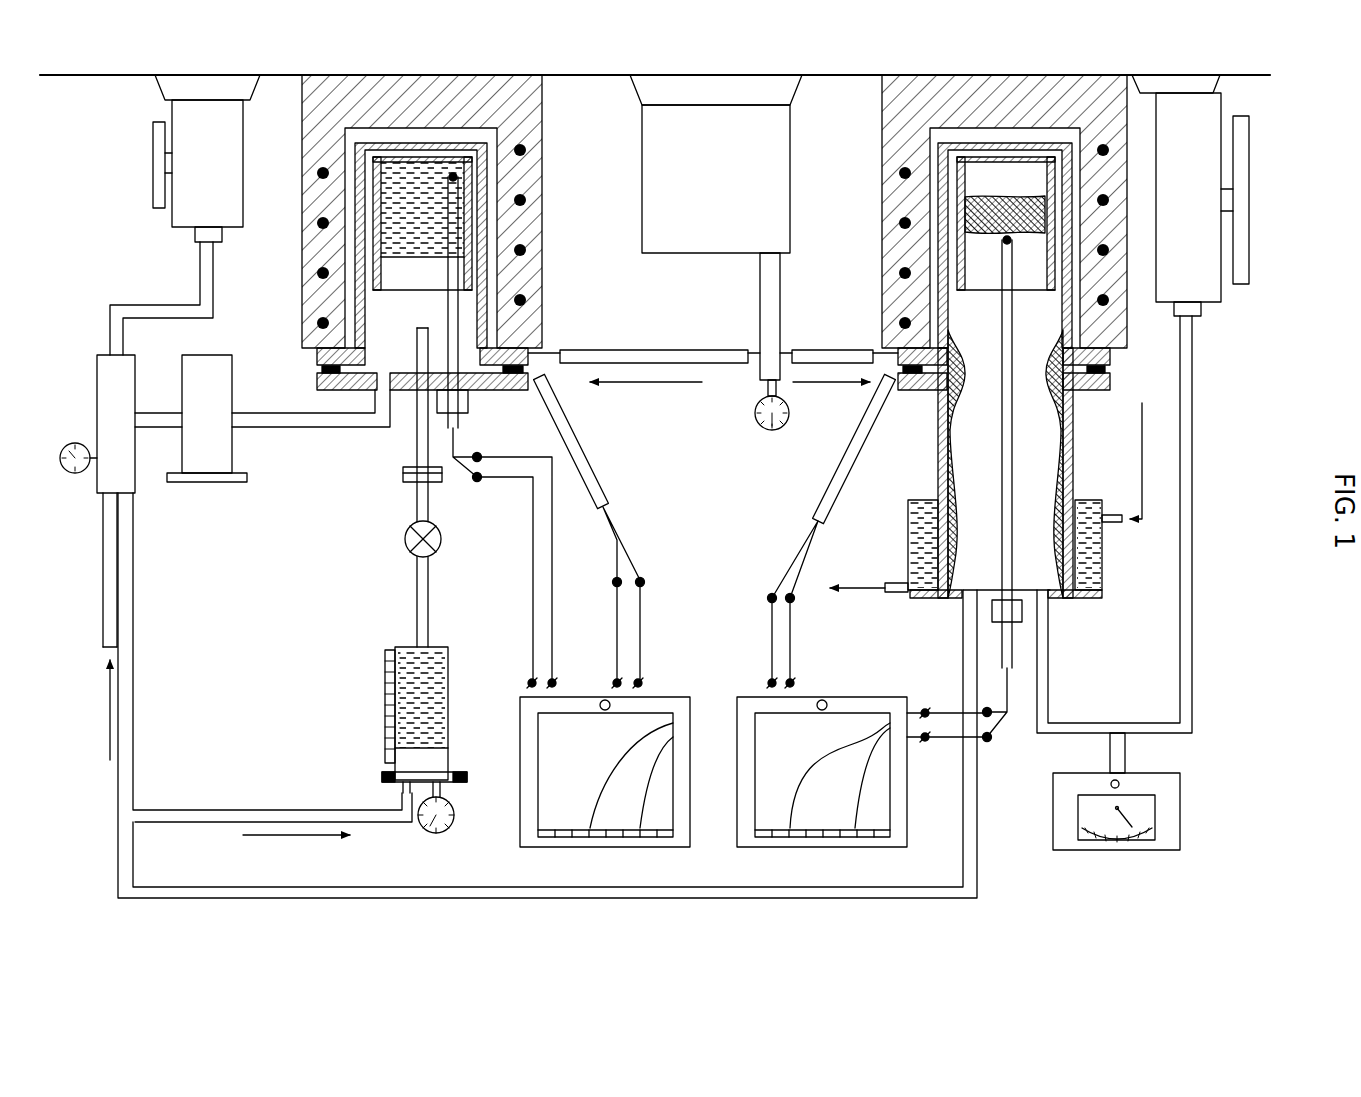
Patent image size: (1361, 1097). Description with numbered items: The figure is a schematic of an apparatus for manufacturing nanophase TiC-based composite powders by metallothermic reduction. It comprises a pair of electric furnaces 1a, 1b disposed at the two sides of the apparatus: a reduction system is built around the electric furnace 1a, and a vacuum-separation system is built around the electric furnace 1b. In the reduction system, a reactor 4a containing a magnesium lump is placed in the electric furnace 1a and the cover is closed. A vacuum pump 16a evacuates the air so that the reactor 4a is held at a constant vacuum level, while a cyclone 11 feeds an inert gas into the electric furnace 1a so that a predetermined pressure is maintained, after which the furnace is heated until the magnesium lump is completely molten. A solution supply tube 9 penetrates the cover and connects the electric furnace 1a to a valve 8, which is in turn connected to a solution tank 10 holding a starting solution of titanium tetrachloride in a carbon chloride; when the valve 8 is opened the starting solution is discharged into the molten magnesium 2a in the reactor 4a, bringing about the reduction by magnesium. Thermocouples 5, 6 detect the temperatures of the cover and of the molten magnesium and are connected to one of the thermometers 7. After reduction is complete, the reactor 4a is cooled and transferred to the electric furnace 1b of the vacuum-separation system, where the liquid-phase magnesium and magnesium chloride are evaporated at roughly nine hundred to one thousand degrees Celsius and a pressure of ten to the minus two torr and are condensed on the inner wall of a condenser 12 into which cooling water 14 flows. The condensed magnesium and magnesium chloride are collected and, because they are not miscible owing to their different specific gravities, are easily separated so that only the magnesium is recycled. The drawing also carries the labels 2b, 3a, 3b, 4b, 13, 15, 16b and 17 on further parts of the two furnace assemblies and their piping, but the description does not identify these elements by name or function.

The electric furnace 1a is at (540, 313).
The electric furnace 1b is at (883, 300).
The molten magnesium 2a is at (470, 177).
The second crucible 2b is at (958, 203).
The first reaction tube 3a is at (355, 243).
The second reaction tube 3b is at (940, 150).
The reactor 4a is at (372, 203).
The second gas passage 4b is at (958, 250).
The thermocouple 5 is at (457, 420).
The thermocouple 6 is at (422, 433).
The thermometer 7 is at (748, 700).
The valve 8 is at (408, 540).
The solution supply tube 9 is at (592, 473).
The solution tank 10 is at (408, 703).
The cyclone 11 is at (225, 452).
The condenser 12 is at (937, 473).
The packing material 13 is at (937, 433).
The cooling water 14 is at (1093, 552).
The meter 15 is at (1062, 792).
The vacuum pump 16a is at (185, 215).
The second drive unit 16b is at (1143, 404).
The balance 17 is at (713, 252).